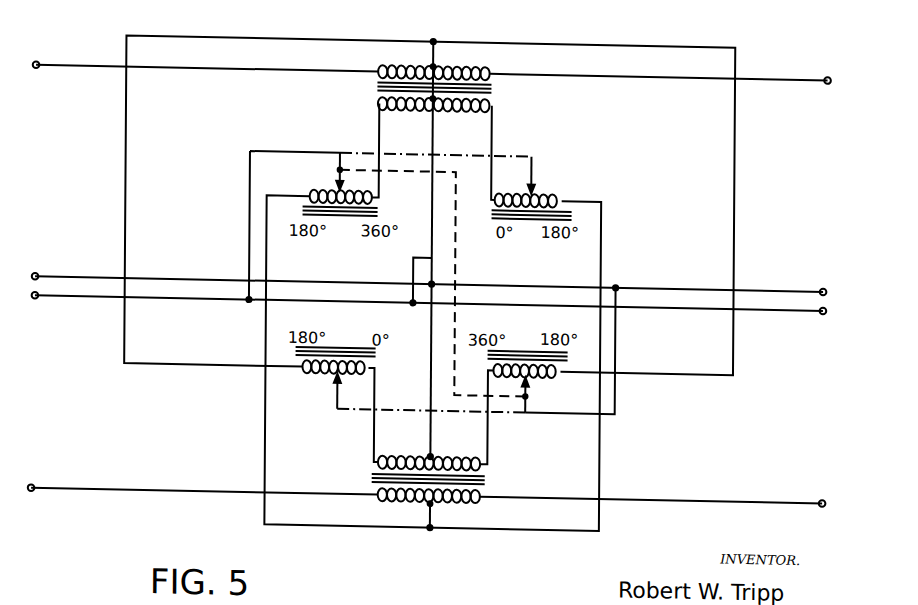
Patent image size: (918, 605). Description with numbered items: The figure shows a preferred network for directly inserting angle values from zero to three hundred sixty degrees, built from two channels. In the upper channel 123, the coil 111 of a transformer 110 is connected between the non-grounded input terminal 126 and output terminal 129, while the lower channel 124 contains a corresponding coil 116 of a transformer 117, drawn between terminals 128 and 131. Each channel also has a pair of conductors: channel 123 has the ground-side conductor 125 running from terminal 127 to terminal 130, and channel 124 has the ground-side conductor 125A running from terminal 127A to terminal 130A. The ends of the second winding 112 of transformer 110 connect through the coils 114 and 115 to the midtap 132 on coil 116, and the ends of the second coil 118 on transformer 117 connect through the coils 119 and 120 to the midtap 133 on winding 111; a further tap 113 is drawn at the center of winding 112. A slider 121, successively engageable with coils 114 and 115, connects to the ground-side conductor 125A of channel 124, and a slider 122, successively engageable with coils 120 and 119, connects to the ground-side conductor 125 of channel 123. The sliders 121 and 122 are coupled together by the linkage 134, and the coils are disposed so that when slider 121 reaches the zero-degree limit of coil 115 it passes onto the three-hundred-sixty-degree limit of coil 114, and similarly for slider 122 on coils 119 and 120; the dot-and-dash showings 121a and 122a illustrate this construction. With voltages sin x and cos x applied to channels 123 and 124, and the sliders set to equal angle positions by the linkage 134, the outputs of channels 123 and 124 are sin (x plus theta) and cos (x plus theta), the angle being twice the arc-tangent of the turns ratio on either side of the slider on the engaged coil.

The transformer 110 is at (465, 83).
The coil 111 is at (462, 55).
The second winding 112 is at (459, 101).
The center tap of secondary winding 112 113 is at (431, 104).
The coil 114 is at (321, 183).
The coil 115 is at (557, 185).
The coil 116 is at (389, 490).
The transformer 117 is at (442, 476).
The second coil 118 is at (473, 433).
The coil 119 is at (323, 369).
The coil 120 is at (537, 364).
The slider 121 is at (341, 148).
The slider showing 121a is at (533, 153).
The slider 122 is at (529, 402).
The slider showing 122a is at (340, 391).
The channel 123 is at (80, 183).
The channel 124 is at (82, 411).
The ground-side conductor 125 is at (162, 270).
The ground-side conductor 125A is at (162, 297).
The input terminal 126 is at (62, 40).
The output terminal 127 is at (39, 272).
The output terminal 127A is at (38, 299).
The output terminal 128 is at (34, 490).
The output terminal 129 is at (846, 42).
The output terminal 130 is at (852, 258).
The output terminal 130A is at (829, 298).
The output terminal 131 is at (829, 488).
The midtap 132 is at (436, 506).
The midtap 133 is at (430, 53).
The linkage 134 is at (460, 252).